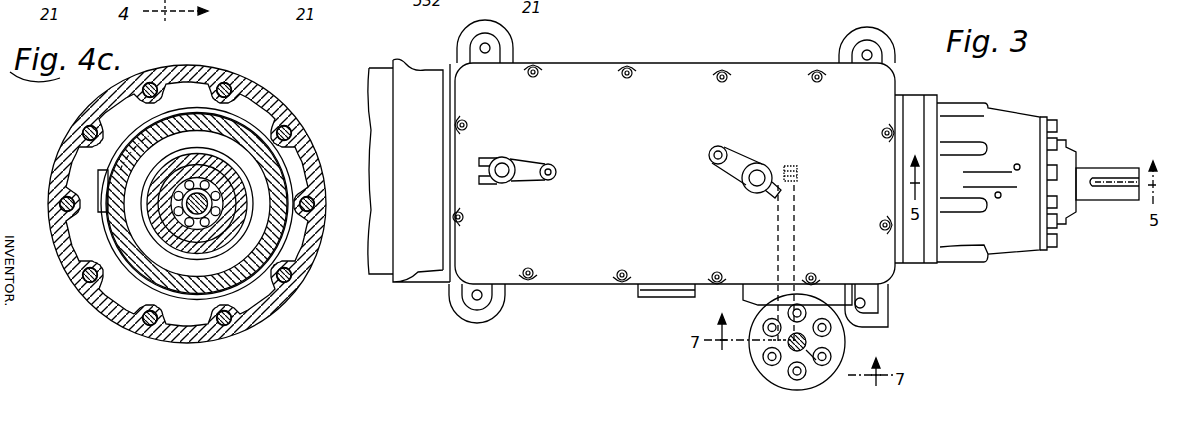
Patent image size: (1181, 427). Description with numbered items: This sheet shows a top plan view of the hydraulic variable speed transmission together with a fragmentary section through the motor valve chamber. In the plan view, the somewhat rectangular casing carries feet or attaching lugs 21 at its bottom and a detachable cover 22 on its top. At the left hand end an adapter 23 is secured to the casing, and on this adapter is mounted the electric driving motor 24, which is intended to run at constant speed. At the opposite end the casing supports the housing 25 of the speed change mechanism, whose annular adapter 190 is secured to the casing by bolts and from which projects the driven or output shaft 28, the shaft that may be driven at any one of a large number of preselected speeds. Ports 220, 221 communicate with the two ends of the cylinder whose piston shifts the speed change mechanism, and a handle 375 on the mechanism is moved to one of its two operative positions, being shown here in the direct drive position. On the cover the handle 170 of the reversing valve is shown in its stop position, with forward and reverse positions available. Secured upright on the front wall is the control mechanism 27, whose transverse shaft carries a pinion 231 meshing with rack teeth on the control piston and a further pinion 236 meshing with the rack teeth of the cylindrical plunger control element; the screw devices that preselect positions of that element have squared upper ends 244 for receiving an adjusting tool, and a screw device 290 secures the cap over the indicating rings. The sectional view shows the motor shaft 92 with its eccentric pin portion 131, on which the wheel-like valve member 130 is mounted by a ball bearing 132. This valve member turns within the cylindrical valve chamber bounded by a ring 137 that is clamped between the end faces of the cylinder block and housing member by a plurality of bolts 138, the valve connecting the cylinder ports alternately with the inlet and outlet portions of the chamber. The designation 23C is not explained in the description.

In FIG. 3, the attaching lugs 21 is at (505, 38).
In FIG. 3, the detachable cover 22 is at (680, 78).
In FIG. 3, the adapter 23 is at (410, 70).
In FIG. 3, the electric driving motor 24 is at (375, 68).
In FIG. 3, the housing 25 is at (1008, 108).
In FIG. 3, the control mechanism 27 is at (755, 374).
In FIG. 3, the output shaft 28 is at (1098, 168).
In FIG. 4C, the shaft 92 is at (197, 204).
In FIG. 4C, the valve member 130 is at (254, 133).
In FIG. 4C, the eccentric pin portion 131 is at (200, 196).
In FIG. 4C, the ball bearing 132 is at (192, 227).
In FIG. 4C, the ring 137 is at (276, 302).
In FIG. 4C, the bolts 138 is at (310, 196).
In FIG. 4C, the handle 170 is at (98, 180).
In FIG. 3, the handle 170 is at (522, 163).
In FIG. 3, the annular adapter 190 is at (922, 96).
In FIG. 3, the port 220 is at (1000, 198).
In FIG. 3, the port 221 is at (1018, 164).
In FIG. 3, the pinion 231 is at (800, 172).
In FIG. 3, the control rod 23C is at (797, 232).
In FIG. 3, the pinion 236 is at (772, 344).
In FIG. 3, the squared upper ends 244 is at (831, 356).
In FIG. 3, the screw device 290 is at (816, 364).
In FIG. 3, the handle 375 is at (736, 162).